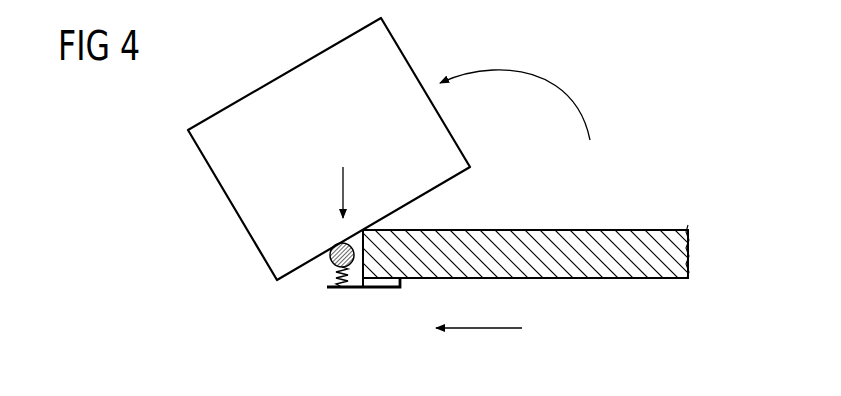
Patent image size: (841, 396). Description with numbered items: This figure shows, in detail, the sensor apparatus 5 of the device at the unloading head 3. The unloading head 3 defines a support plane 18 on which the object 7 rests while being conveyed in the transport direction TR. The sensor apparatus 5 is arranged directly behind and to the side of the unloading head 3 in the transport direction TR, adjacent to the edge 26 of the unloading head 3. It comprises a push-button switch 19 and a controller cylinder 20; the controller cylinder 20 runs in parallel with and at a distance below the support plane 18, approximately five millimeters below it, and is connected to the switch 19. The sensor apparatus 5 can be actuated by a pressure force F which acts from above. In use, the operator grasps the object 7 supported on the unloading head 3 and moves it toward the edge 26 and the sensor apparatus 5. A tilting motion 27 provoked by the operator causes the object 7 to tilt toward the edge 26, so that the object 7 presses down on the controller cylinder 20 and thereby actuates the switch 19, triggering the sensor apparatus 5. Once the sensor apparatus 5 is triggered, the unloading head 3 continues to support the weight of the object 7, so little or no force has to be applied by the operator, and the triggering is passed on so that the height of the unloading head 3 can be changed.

The unloading head 3 is at (636, 278).
The sensor apparatus 5 is at (320, 276).
The object 7 is at (230, 186).
The support plane 18 is at (640, 230).
The push-button switch 19 is at (345, 300).
The controller cylinder 20 is at (333, 247).
The edge 26 is at (412, 220).
The tilting motion 27 is at (567, 98).
The pressure force F is at (351, 191).
The transport direction TR is at (479, 313).